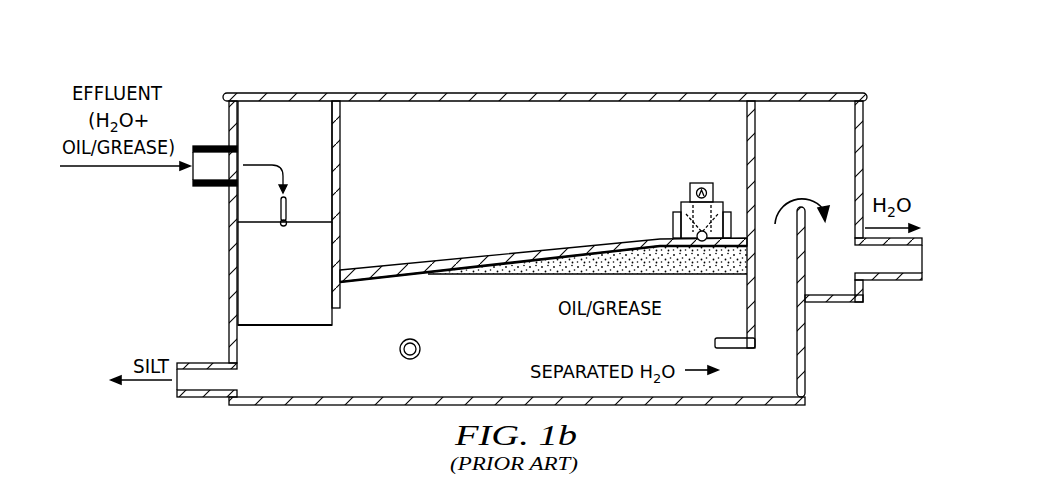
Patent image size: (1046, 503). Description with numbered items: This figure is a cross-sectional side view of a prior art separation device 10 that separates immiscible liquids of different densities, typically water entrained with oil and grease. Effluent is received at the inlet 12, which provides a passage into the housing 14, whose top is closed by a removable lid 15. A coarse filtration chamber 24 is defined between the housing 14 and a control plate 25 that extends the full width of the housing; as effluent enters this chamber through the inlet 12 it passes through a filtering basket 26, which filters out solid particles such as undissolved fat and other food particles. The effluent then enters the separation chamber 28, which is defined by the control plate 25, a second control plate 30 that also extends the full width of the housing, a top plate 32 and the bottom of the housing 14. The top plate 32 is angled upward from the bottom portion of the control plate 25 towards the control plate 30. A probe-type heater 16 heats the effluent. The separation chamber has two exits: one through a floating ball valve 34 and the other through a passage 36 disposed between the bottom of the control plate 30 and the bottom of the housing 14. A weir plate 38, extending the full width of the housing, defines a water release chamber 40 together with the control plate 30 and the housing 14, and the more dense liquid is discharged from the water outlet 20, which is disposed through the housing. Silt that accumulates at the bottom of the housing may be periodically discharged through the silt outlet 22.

The separation device 10 is at (386, 57).
The inlet 12 is at (220, 188).
The housing 14 is at (229, 281).
The removable lid 15 is at (582, 92).
The probe-type heater 16 is at (400, 351).
The water outlet 20 is at (893, 282).
The silt outlet 22 is at (207, 398).
The coarse filtration chamber 24 is at (271, 146).
The control plate 25 is at (341, 140).
The filtering basket 26 is at (288, 327).
The separation chamber 28 is at (486, 336).
The control plate 30 is at (618, 274).
The top plate 32 is at (447, 262).
The floating ball valve 34 is at (690, 193).
The passage 36 is at (735, 373).
The weir plate 38 is at (805, 246).
The water release chamber 40 is at (793, 146).